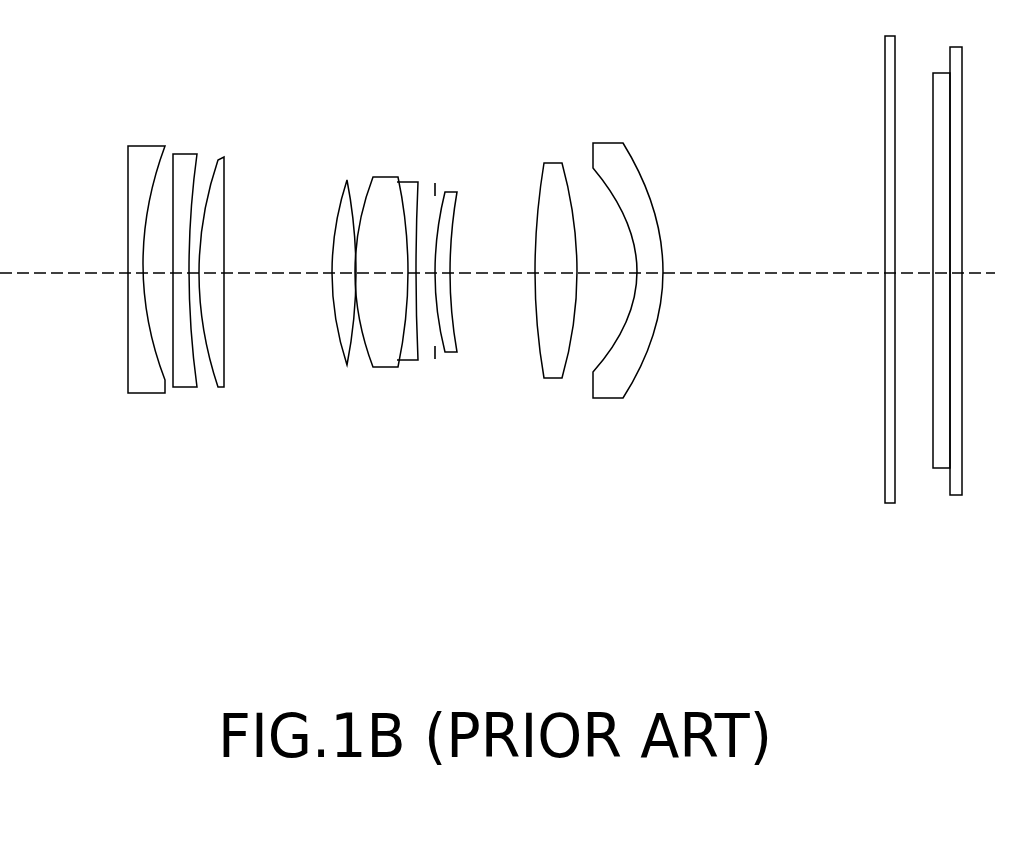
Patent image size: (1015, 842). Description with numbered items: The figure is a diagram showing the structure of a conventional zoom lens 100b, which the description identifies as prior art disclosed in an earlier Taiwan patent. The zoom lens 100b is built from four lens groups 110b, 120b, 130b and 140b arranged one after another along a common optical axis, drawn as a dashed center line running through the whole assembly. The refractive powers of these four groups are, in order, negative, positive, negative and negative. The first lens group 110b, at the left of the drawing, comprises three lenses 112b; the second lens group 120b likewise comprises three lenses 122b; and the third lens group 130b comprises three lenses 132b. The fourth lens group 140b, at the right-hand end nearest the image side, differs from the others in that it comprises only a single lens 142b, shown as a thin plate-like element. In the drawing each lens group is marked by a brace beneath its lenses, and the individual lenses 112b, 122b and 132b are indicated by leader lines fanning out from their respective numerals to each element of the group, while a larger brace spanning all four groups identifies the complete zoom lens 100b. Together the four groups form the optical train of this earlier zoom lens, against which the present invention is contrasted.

The zoom lens 100b is at (535, 347).
The lens group 110b is at (179, 316).
The lenses 112b is at (217, 183).
The lens group 120b is at (379, 316).
The lenses 122b is at (410, 207).
The lens group 130b is at (568, 316).
The lenses 132b is at (457, 197).
The lens group 140b is at (862, 310).
The lens 142b is at (892, 115).